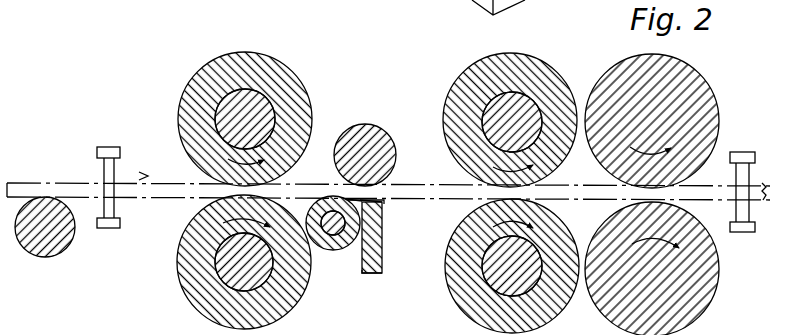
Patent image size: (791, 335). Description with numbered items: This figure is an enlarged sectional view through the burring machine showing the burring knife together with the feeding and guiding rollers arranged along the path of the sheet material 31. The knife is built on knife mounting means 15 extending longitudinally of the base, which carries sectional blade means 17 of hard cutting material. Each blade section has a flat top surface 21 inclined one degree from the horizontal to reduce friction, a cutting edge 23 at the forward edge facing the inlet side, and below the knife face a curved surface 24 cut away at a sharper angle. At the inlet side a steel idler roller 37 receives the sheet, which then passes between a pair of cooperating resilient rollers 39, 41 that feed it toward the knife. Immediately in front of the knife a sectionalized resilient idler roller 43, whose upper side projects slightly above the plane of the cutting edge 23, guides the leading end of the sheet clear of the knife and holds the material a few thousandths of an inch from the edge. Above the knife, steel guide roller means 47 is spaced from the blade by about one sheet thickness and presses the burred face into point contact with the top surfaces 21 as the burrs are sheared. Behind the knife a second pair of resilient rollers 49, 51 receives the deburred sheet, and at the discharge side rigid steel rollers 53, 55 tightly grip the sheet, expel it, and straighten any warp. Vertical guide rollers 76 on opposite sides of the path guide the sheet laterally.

The knife mounting means 15 is at (382, 254).
The blade means 17 is at (383, 207).
The flat top surfaces 21 is at (370, 200).
The cutting edge 23 is at (348, 200).
The curved surface 24 is at (358, 276).
The sheet material 31 is at (27, 185).
The idler roller 37 is at (52, 255).
The roller 39 is at (183, 289).
The roller 41 is at (183, 106).
The sectionalized idler roller 43 is at (333, 250).
The guide roller means 47 is at (368, 125).
The roller 49 is at (448, 287).
The roller 51 is at (453, 87).
The rigid roller 53 is at (719, 268).
The rigid roller 55 is at (717, 104).
The vertical guide rollers 76 is at (102, 167).